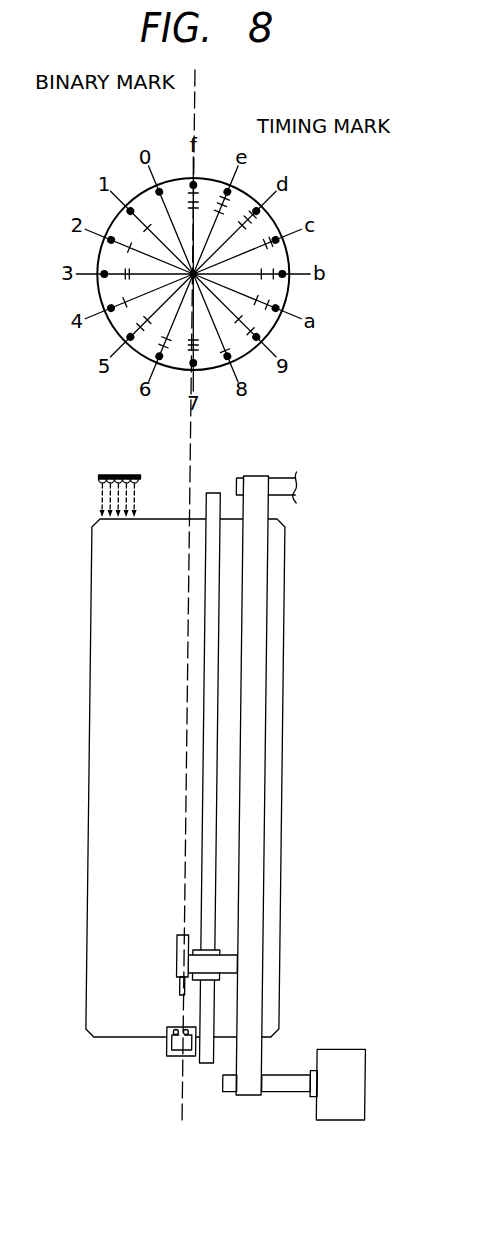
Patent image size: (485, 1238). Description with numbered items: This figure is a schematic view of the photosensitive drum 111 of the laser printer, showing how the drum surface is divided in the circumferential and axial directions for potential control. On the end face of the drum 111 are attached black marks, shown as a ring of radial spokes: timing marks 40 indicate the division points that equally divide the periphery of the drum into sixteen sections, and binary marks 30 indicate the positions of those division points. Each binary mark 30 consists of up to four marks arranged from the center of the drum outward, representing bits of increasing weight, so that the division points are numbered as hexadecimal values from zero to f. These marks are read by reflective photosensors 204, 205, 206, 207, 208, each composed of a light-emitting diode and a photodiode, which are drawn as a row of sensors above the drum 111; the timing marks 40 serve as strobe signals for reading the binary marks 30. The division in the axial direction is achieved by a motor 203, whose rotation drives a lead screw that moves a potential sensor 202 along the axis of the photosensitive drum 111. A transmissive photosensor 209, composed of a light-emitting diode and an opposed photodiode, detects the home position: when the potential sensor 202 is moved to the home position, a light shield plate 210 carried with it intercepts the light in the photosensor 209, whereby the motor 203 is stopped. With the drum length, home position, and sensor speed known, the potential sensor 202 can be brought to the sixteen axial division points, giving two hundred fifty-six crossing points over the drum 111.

The binary mark 30 is at (186, 212).
The timing mark 40 is at (200, 184).
The photosensitive drum 111 is at (290, 262).
The potential sensor 202 is at (177, 950).
The motor 203 is at (365, 1080).
The reflective photosensor 204 is at (98, 478).
The reflective photosensor 205 is at (108, 477).
The reflective photosensor 206 is at (118, 477).
The reflective photosensor 207 is at (128, 477).
The reflective photosensor 208 is at (137, 477).
The transmissive photosensor 209 is at (172, 1040).
The light shield plate 210 is at (180, 993).